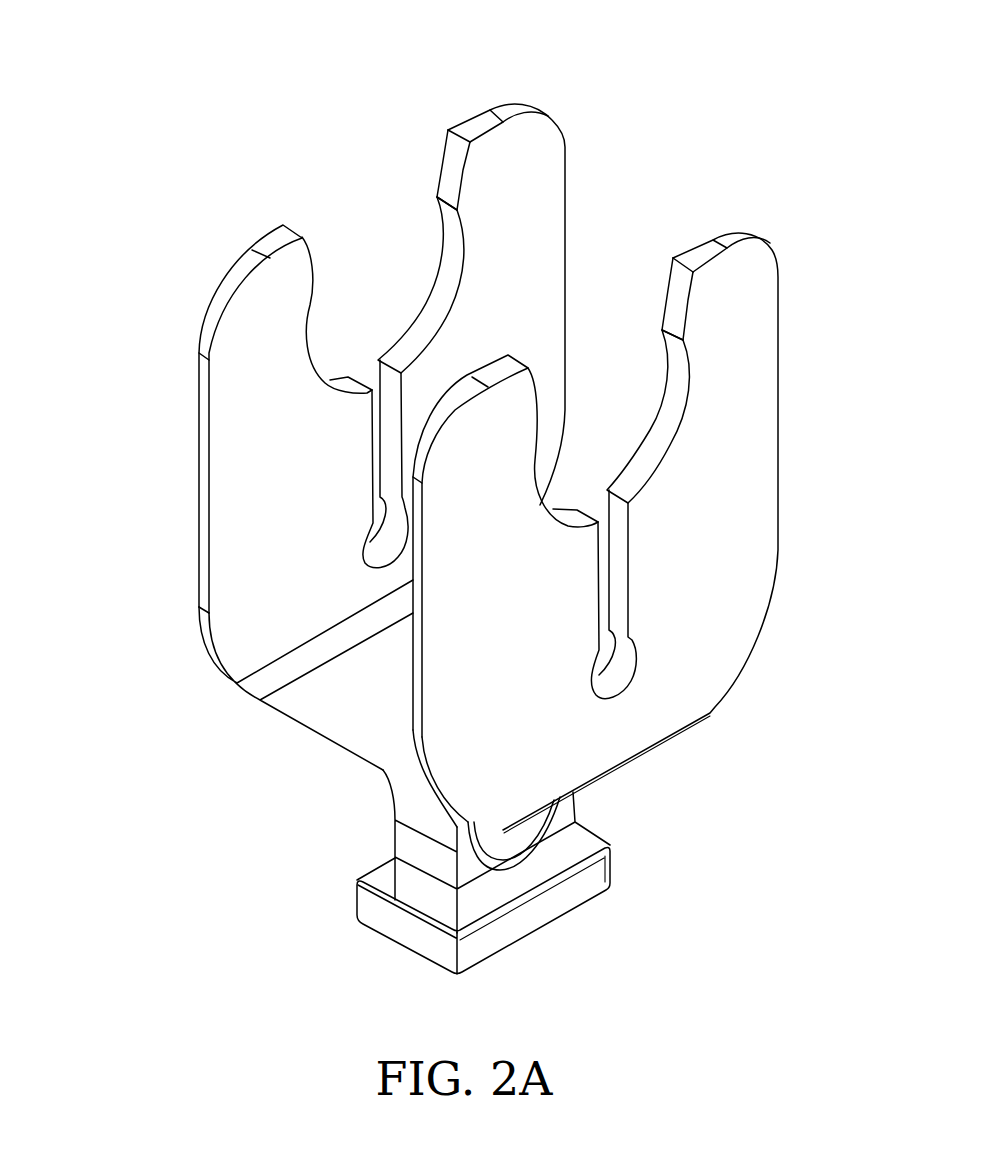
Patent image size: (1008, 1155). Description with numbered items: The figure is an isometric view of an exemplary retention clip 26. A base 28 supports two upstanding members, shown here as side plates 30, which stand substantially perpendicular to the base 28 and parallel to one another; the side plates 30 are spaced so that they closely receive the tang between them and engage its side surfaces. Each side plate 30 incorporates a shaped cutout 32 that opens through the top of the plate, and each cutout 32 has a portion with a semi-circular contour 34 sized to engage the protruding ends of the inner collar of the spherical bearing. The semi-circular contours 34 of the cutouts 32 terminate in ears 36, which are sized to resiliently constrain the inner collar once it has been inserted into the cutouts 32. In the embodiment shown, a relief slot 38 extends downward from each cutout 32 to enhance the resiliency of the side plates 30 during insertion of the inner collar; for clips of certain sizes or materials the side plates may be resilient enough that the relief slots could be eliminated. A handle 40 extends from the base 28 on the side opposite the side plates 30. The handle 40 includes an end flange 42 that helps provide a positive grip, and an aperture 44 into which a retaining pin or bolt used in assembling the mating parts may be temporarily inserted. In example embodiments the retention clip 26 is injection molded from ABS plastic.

The retention clip 26 is at (178, 200).
The base 28 is at (333, 710).
The side plates 30 is at (535, 210).
The shaped cutout 32 is at (370, 240).
The semi-circular contour 34 is at (440, 297).
The ears 36 is at (447, 163).
The relief slot 38 is at (387, 440).
The handle 40 is at (420, 840).
The end flange 42 is at (392, 933).
The aperture 44 is at (507, 837).